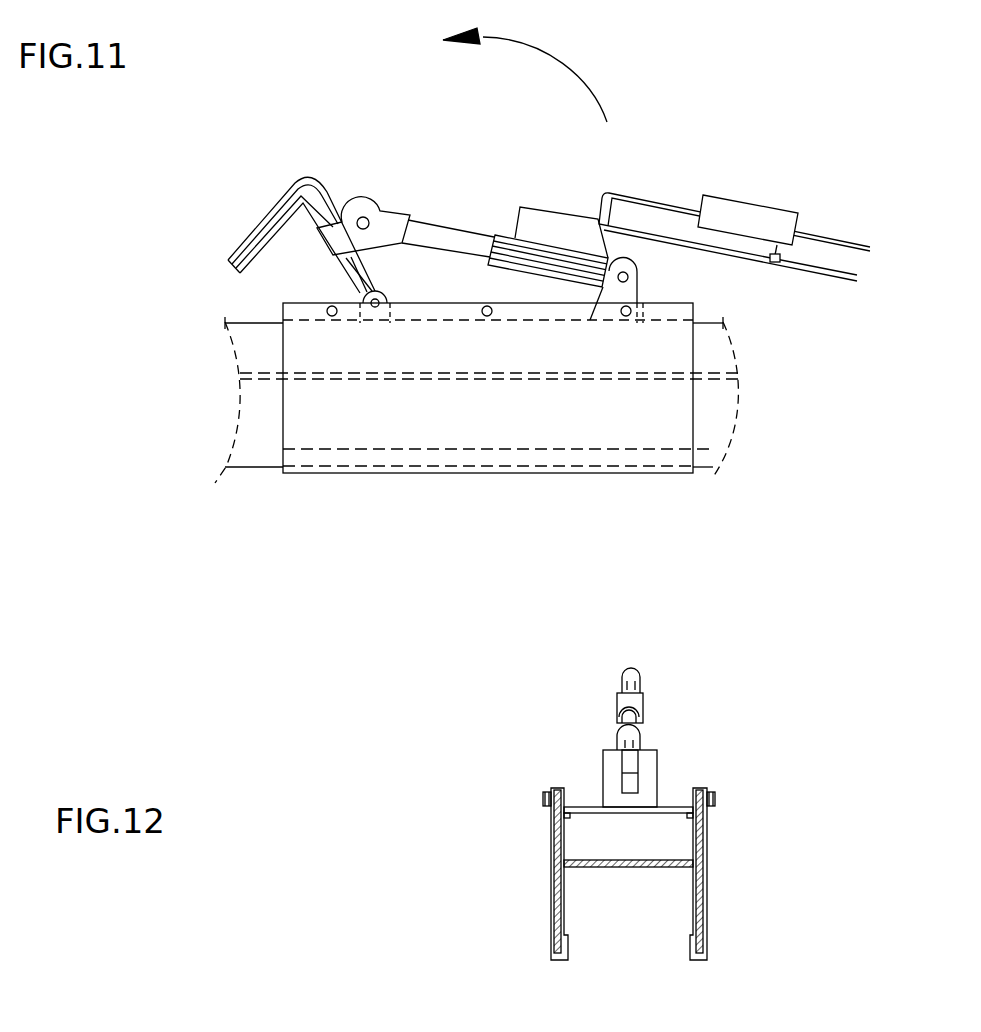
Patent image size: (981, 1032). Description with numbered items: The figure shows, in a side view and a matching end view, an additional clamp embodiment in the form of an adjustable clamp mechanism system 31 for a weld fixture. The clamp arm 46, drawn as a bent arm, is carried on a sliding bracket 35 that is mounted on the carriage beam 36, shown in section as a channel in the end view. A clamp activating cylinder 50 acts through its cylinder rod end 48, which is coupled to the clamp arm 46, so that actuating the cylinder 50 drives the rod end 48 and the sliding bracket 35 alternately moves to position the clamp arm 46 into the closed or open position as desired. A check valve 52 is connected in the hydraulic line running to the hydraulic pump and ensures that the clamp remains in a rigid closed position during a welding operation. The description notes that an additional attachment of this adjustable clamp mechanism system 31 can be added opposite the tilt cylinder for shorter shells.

In FIG. 11, the adjustable clamp mechanism system 31 is at (735, 80).
In FIG. 12, the adjustable clamp mechanism system 31 is at (830, 621).
In FIG. 11, the sliding bracket 35 is at (492, 472).
In FIG. 12, the sliding bracket 35 is at (552, 838).
In FIG. 11, the carriage beam 36 is at (252, 467).
In FIG. 12, the carriage beam 36 is at (565, 908).
In FIG. 11, the clamp arm 46 is at (323, 187).
In FIG. 12, the clamp arm 46 is at (632, 665).
In FIG. 11, the cylinder rod end 48 is at (387, 208).
In FIG. 11, the clamp activating cylinder 50 is at (495, 237).
In FIG. 12, the clamp activating cylinder 50 is at (618, 737).
In FIG. 11, the check valve 52 is at (745, 200).